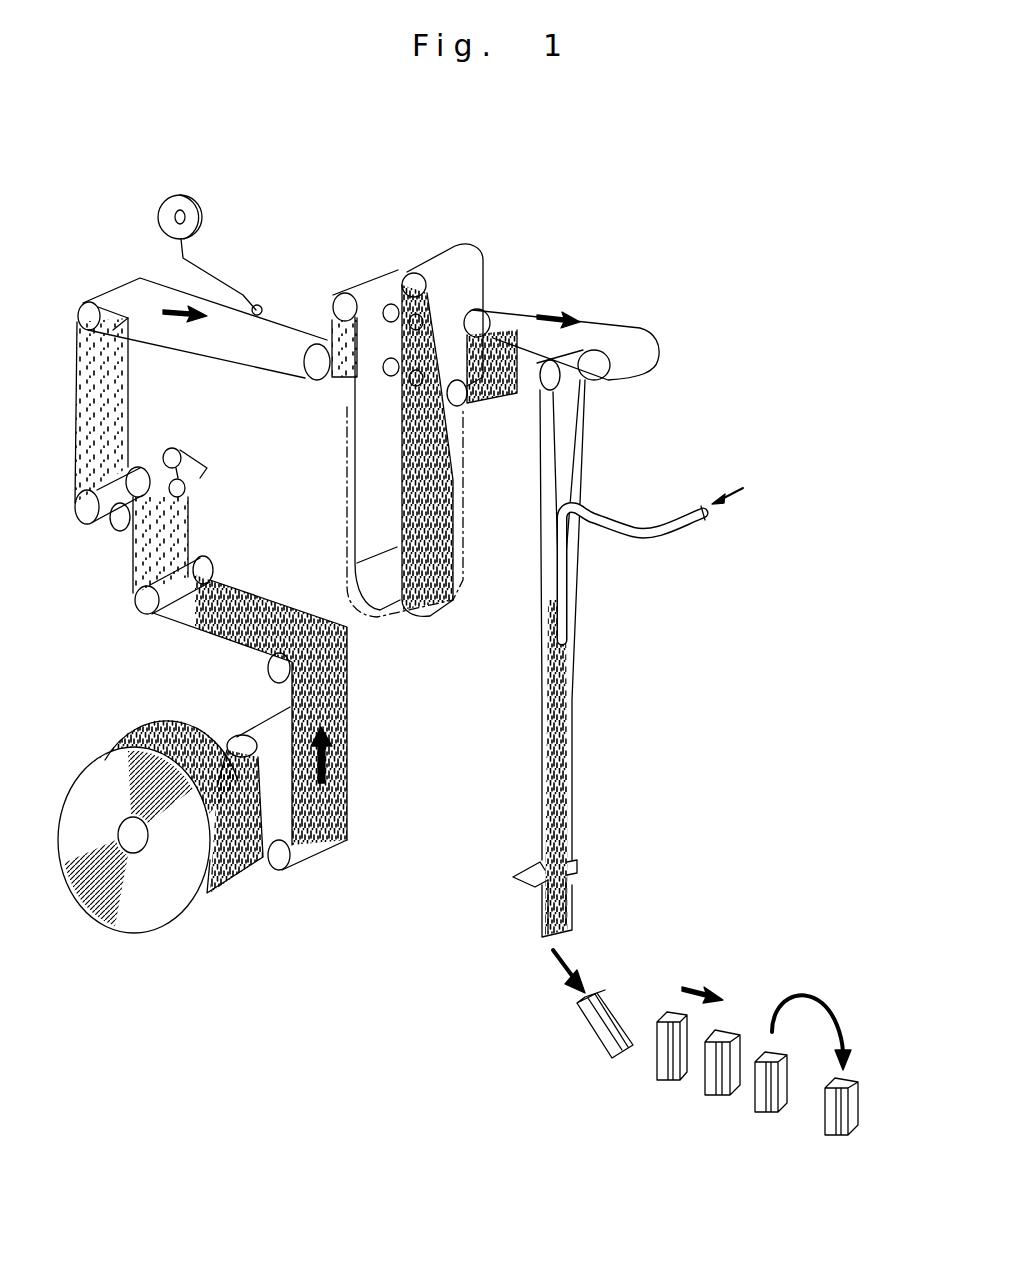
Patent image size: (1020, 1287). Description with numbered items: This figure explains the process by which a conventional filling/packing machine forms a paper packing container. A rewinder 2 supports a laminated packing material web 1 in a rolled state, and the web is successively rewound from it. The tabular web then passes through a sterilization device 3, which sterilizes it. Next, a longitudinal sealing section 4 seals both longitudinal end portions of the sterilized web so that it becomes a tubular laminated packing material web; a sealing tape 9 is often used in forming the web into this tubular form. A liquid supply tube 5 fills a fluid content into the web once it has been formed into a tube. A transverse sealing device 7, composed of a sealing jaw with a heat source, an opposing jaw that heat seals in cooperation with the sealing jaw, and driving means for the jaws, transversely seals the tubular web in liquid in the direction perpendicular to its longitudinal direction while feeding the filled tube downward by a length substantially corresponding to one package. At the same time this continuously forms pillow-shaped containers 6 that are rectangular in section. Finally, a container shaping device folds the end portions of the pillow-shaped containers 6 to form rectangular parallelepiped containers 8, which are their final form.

The laminated packing material web 1 is at (193, 627).
The rewinder 2 is at (163, 928).
The sterilization device 3 is at (377, 618).
The longitudinal sealing section 4 is at (600, 711).
The liquid supply tube 5 is at (622, 528).
The pillow-shaped containers 6 is at (578, 905).
The transverse sealing device 7 is at (500, 834).
The rectangular parallelepiped containers 8 is at (860, 1082).
The sealing tape 9 is at (251, 254).